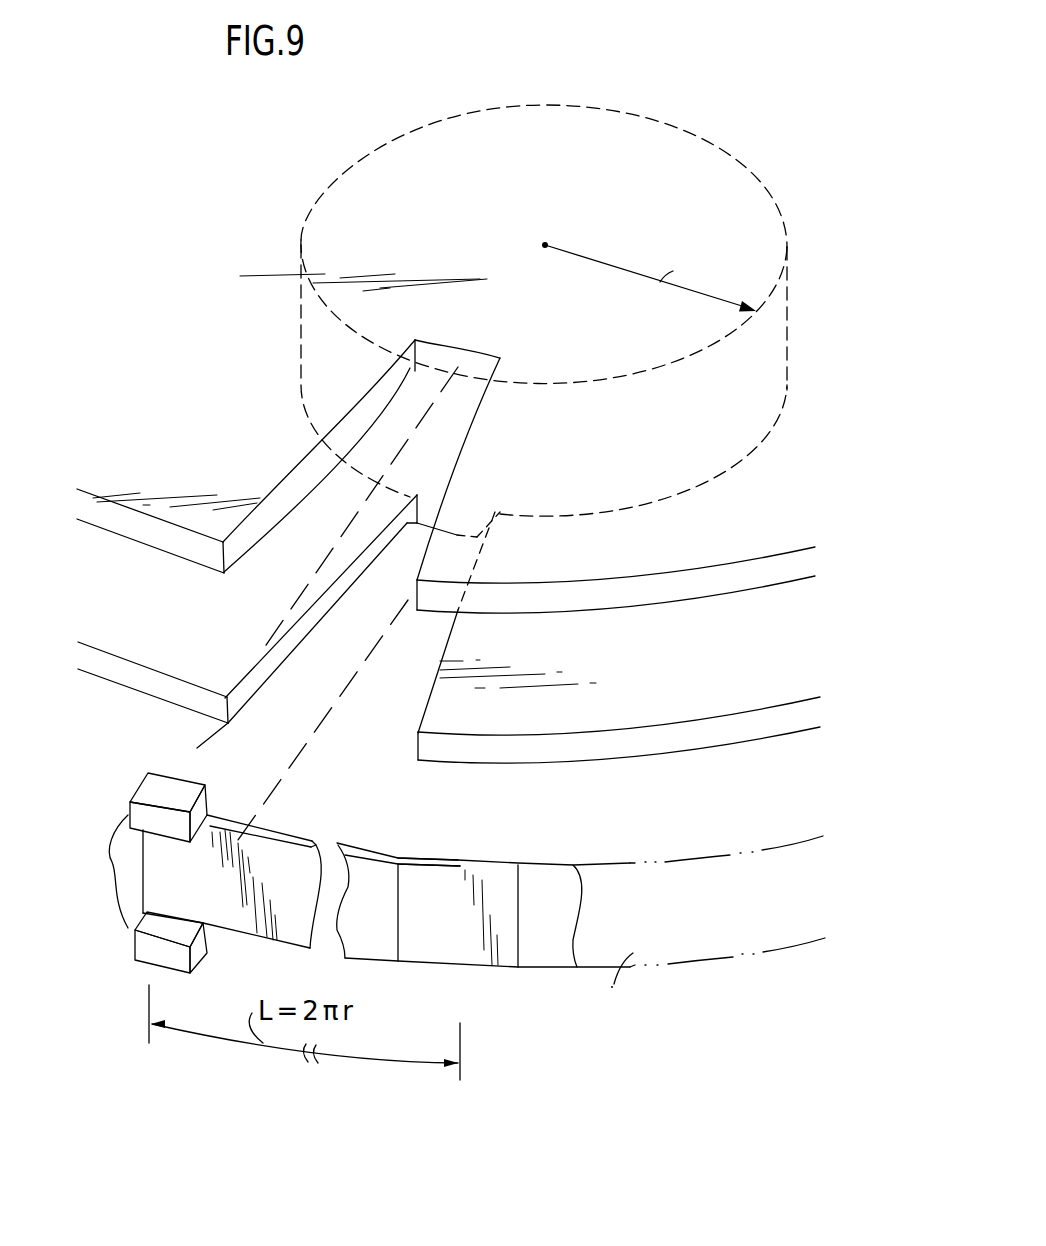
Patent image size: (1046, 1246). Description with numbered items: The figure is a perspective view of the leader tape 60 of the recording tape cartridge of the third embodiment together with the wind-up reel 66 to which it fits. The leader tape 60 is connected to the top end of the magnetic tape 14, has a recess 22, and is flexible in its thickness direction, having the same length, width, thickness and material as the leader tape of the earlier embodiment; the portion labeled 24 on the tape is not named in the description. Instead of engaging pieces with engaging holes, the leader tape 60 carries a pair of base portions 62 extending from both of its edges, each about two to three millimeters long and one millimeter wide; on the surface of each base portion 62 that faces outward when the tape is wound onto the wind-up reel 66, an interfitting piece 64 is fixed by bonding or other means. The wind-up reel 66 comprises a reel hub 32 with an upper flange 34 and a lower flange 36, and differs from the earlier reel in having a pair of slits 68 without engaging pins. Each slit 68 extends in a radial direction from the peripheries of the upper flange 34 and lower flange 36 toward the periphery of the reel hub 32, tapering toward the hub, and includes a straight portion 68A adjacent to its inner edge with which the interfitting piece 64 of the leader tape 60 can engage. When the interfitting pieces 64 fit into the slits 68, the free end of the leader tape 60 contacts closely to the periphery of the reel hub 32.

The reel hub 32 is at (683, 133).
The upper flange 34 is at (172, 520).
The lower flange 36 is at (143, 657).
The slit 68 is at (438, 489).
The straight portion 68A is at (486, 370).
The base portion 62 is at (192, 786).
The interfitting piece 64 is at (114, 861).
The leader tape 60 is at (287, 860).
The wind-up reel 66 is at (68, 692).
The recess 22 is at (440, 874).
The belt segment 24 is at (503, 962).
The magnetic tape 14 is at (555, 955).